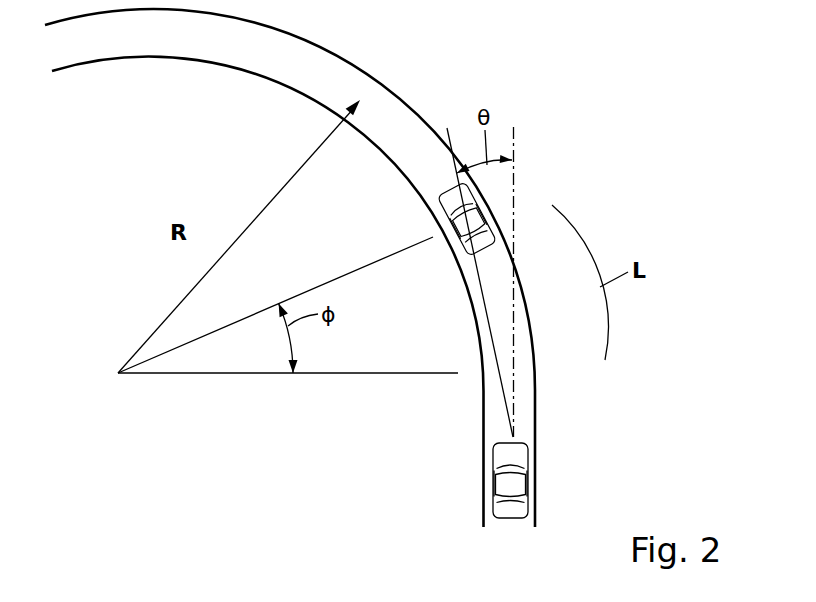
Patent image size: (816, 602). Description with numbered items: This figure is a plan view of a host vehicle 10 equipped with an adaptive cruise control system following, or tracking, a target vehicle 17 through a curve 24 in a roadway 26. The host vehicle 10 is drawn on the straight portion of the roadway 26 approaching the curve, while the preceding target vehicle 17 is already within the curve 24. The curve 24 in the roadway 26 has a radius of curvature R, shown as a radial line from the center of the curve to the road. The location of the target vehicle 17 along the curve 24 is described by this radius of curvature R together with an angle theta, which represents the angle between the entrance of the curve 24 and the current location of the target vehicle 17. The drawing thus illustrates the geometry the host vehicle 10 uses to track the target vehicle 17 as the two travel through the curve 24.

The host vehicle 10 is at (528, 480).
The target vehicle 17 is at (438, 202).
The curve 24 is at (290, 268).
The roadway 26 is at (130, 59).